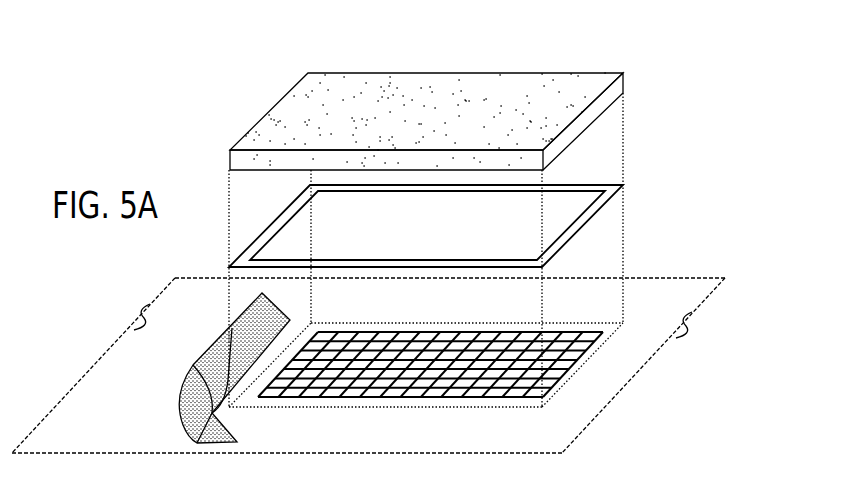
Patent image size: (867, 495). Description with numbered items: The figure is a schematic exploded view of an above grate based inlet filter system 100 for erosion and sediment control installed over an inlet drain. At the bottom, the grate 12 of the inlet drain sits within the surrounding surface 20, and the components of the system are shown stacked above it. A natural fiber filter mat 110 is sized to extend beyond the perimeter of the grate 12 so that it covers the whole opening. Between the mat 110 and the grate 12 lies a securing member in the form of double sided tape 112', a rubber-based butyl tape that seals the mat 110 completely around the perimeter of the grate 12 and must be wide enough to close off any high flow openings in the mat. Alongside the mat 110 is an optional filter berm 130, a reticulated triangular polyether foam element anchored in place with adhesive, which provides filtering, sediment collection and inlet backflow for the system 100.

The above grate based inlet filter system 100 is at (684, 66).
The natural fiber filter mat 110 is at (280, 112).
The double sided tape 112' is at (459, 217).
The filter berm 130 is at (177, 415).
The base plate / substrate 20 is at (686, 322).
The grate 12 is at (563, 371).